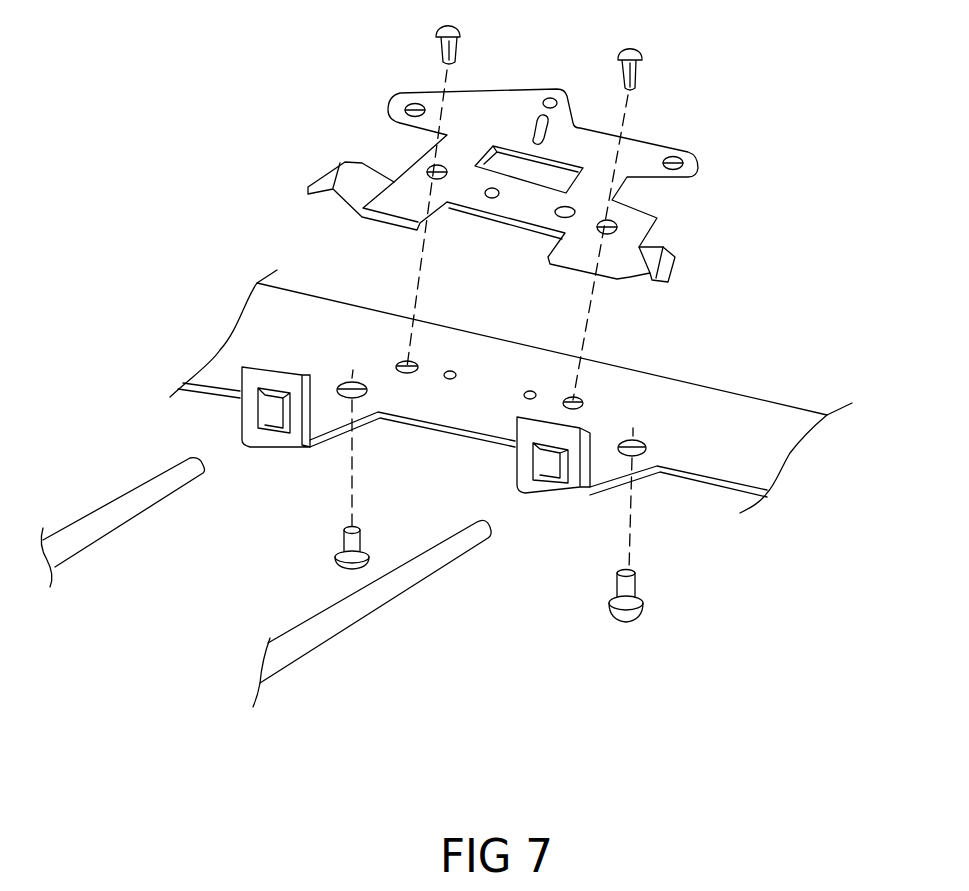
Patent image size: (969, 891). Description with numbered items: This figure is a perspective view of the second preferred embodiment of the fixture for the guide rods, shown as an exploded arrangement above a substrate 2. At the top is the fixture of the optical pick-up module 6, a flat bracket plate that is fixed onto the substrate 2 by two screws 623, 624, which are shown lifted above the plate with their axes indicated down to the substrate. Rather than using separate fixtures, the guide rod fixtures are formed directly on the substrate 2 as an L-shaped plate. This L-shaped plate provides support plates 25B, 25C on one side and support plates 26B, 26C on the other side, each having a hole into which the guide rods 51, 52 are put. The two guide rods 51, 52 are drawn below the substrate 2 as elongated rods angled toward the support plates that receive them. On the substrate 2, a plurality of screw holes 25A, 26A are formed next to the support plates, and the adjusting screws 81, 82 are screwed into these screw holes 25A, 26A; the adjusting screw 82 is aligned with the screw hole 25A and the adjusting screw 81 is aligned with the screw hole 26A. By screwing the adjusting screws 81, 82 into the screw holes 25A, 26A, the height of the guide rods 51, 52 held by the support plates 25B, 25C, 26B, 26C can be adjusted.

The optical pick-up module 6 is at (680, 108).
The screw 623 is at (437, 28).
The screw 624 is at (632, 44).
The substrate 2 is at (737, 415).
The support plate 25B is at (243, 421).
The support plate 25C is at (295, 440).
The screw hole 25A is at (361, 400).
The support plate 26B is at (515, 463).
The support plate 26C is at (573, 480).
The screw hole 26A is at (640, 455).
The guide rod 51 is at (123, 517).
The guide rod 52 is at (358, 617).
The adjusting screw 82 is at (327, 563).
The adjusting screw 81 is at (623, 633).